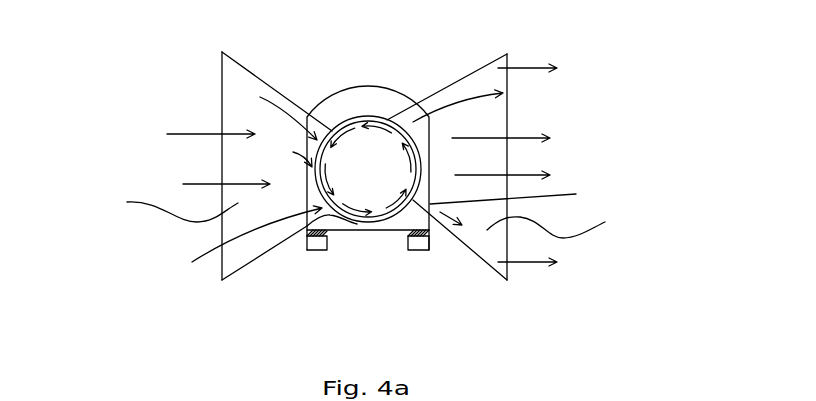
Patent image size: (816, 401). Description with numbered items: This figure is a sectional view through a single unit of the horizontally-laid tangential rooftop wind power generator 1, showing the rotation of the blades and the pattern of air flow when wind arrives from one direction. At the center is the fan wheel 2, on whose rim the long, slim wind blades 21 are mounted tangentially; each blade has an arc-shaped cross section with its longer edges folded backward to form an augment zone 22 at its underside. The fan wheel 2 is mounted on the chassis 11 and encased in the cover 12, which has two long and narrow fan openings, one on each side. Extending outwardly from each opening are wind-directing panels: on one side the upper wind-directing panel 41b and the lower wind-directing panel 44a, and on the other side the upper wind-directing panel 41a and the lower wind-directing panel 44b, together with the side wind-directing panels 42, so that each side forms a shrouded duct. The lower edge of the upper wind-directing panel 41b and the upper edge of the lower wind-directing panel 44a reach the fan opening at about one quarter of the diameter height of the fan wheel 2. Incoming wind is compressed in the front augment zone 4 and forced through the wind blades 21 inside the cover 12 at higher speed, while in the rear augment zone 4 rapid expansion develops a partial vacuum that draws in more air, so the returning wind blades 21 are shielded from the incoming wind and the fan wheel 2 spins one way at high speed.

The horizontally-laid tangential rooftop wind power generator 1 is at (345, 222).
The fan wheel 2 is at (392, 124).
The augment zone 4 is at (185, 101).
The chassis 11 is at (327, 232).
The cover 12 is at (364, 86).
The wind blade 21 is at (338, 126).
The augment zone 22 is at (358, 213).
The upper wind-directing panel 41a is at (489, 62).
The upper wind-directing panel 41b is at (237, 64).
The side wind-directing panel 42 is at (371, 213).
The lower wind-directing panel 44a is at (485, 270).
The lower wind-directing panel 44b is at (258, 268).